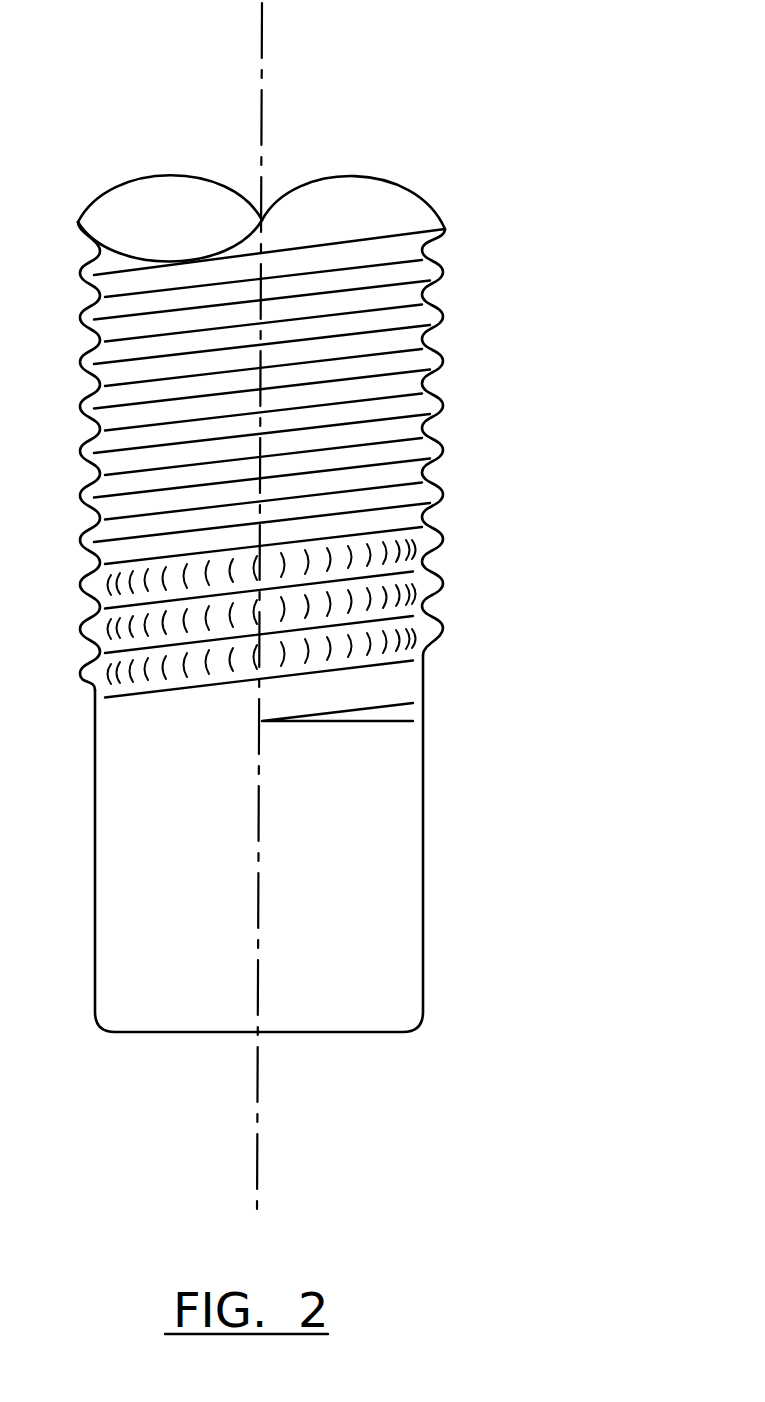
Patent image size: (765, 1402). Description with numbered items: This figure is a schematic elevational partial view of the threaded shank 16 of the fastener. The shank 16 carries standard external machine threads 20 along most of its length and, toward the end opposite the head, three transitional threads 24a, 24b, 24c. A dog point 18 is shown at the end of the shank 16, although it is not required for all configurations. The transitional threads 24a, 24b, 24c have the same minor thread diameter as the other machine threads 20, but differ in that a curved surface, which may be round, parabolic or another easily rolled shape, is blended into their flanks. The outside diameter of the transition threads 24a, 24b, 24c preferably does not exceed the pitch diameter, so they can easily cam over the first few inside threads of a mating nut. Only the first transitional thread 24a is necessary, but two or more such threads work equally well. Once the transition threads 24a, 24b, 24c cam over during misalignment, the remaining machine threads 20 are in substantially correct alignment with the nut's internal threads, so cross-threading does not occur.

The threaded shank 16 is at (352, 207).
The dog point 18 is at (347, 955).
The external machine threads 20 is at (448, 327).
The first transitional thread 24a is at (442, 638).
The second transitional thread 24b is at (442, 595).
The third transitional thread 24c is at (442, 550).